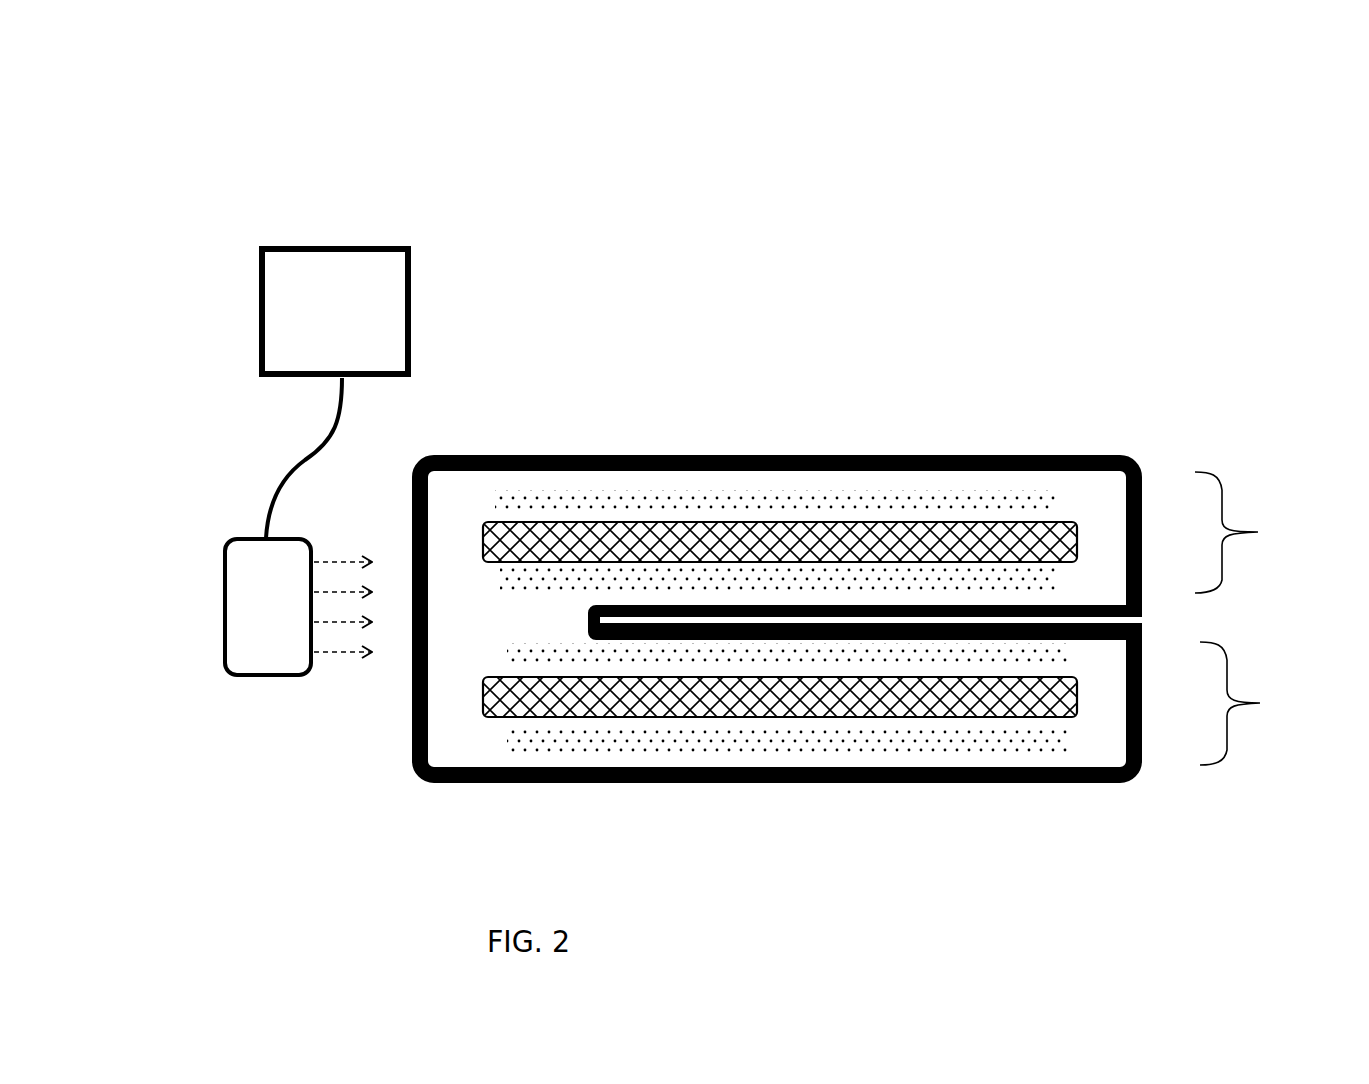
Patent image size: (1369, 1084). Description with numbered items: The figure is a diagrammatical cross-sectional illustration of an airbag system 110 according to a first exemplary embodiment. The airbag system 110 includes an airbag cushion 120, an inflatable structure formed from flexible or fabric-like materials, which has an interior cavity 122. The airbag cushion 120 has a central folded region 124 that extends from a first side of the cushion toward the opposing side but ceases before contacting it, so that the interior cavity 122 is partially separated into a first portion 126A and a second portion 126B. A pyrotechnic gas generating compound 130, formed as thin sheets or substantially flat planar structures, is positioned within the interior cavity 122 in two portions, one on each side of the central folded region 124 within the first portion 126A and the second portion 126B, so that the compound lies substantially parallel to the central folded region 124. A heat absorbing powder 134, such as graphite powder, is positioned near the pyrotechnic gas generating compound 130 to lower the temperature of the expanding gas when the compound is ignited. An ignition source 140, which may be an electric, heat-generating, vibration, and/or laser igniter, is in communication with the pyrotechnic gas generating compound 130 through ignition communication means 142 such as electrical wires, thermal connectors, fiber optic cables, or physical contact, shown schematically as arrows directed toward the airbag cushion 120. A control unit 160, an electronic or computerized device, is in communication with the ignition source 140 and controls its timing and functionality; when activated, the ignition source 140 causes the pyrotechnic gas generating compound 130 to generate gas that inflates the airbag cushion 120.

The airbag system 110 is at (190, 144).
The airbag cushion 120 is at (540, 455).
The interior cavity 122 is at (723, 490).
The central folded region 124 is at (1142, 619).
The first portion 126A is at (1263, 532).
The second portion 126B is at (1266, 703).
The pyrotechnic gas generating compound 130 is at (800, 547).
The heat absorbing powder 134 is at (987, 655).
The ignition source 140 is at (288, 618).
The ignition communication means 142 is at (343, 682).
The control unit 160 is at (362, 331).